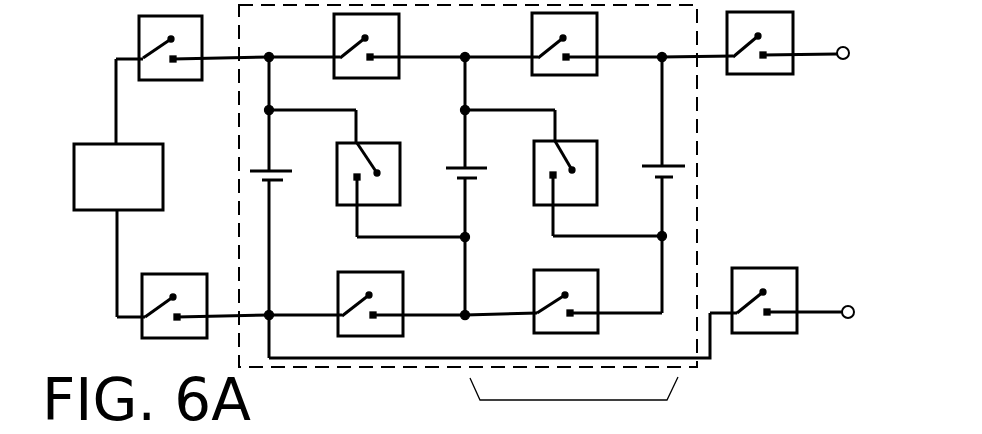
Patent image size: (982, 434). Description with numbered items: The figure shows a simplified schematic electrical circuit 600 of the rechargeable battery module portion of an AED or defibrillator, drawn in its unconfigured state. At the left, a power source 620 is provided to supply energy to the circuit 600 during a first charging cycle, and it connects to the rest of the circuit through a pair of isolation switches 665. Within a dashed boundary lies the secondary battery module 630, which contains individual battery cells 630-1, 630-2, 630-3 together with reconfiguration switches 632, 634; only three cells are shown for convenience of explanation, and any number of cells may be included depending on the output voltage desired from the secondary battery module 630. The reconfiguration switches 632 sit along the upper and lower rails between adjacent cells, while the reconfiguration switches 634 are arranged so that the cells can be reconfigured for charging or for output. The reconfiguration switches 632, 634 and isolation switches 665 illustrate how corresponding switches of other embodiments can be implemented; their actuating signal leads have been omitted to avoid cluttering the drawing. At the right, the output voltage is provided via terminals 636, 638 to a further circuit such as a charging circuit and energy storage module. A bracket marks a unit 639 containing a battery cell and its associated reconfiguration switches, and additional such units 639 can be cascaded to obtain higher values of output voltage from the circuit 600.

The simplified schematic electrical circuit 600 is at (815, 167).
The power source 620 is at (139, 190).
The secondary battery module 630 is at (235, 125).
The battery cell 630-1 is at (262, 170).
The battery cell 630-2 is at (480, 177).
The battery cell 630-3 is at (765, 191).
The reconfiguration switch 632 is at (532, 48).
The reconfiguration switch 634 is at (402, 156).
The output terminal 636 is at (843, 59).
The output terminal 638 is at (845, 306).
The unit 639 is at (618, 399).
The isolation switch 665 is at (139, 40).